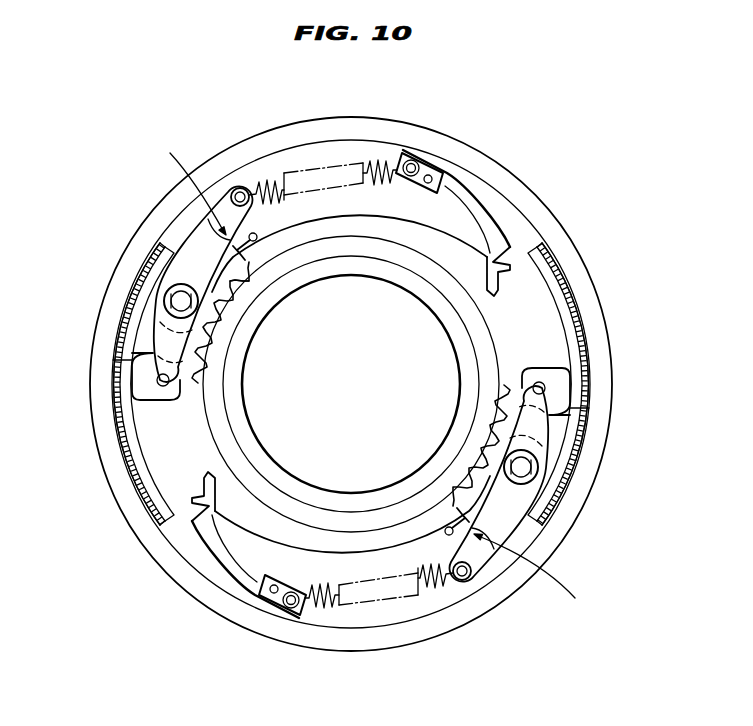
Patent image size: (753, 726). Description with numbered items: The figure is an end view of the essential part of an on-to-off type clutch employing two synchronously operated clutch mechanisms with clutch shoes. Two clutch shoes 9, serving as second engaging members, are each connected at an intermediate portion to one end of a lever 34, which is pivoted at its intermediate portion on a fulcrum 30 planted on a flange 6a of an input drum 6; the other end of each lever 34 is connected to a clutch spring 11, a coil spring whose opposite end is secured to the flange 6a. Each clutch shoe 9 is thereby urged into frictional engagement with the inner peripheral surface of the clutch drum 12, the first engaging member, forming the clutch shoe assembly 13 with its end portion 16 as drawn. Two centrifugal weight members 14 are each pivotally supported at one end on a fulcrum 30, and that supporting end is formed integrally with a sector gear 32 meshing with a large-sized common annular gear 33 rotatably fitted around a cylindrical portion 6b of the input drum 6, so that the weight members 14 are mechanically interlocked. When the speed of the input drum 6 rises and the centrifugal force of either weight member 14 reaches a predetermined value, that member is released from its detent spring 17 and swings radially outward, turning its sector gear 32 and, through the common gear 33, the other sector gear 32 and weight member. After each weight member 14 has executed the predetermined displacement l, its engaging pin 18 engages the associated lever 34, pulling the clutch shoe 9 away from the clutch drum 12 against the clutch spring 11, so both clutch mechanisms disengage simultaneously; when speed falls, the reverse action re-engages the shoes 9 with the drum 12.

The input drum 6 is at (437, 340).
The flange 6a is at (548, 343).
The cylindrical portion 6b is at (410, 287).
The clutch shoe 9 is at (145, 258).
The clutch spring 11 is at (270, 170).
The clutch drum 12 is at (152, 230).
The brake shoe 13 is at (83, 192).
The centrifugal weight member 14 is at (445, 215).
The shoe end 16 is at (503, 283).
The detent spring 17 is at (503, 223).
The engaging pin 18 is at (257, 243).
The fulcrum 30 is at (173, 302).
The sector gear 32 is at (233, 318).
The large-sized common annular gear 33 is at (253, 283).
The lever 34 is at (200, 247).
The predetermined displacement l is at (372, 370).